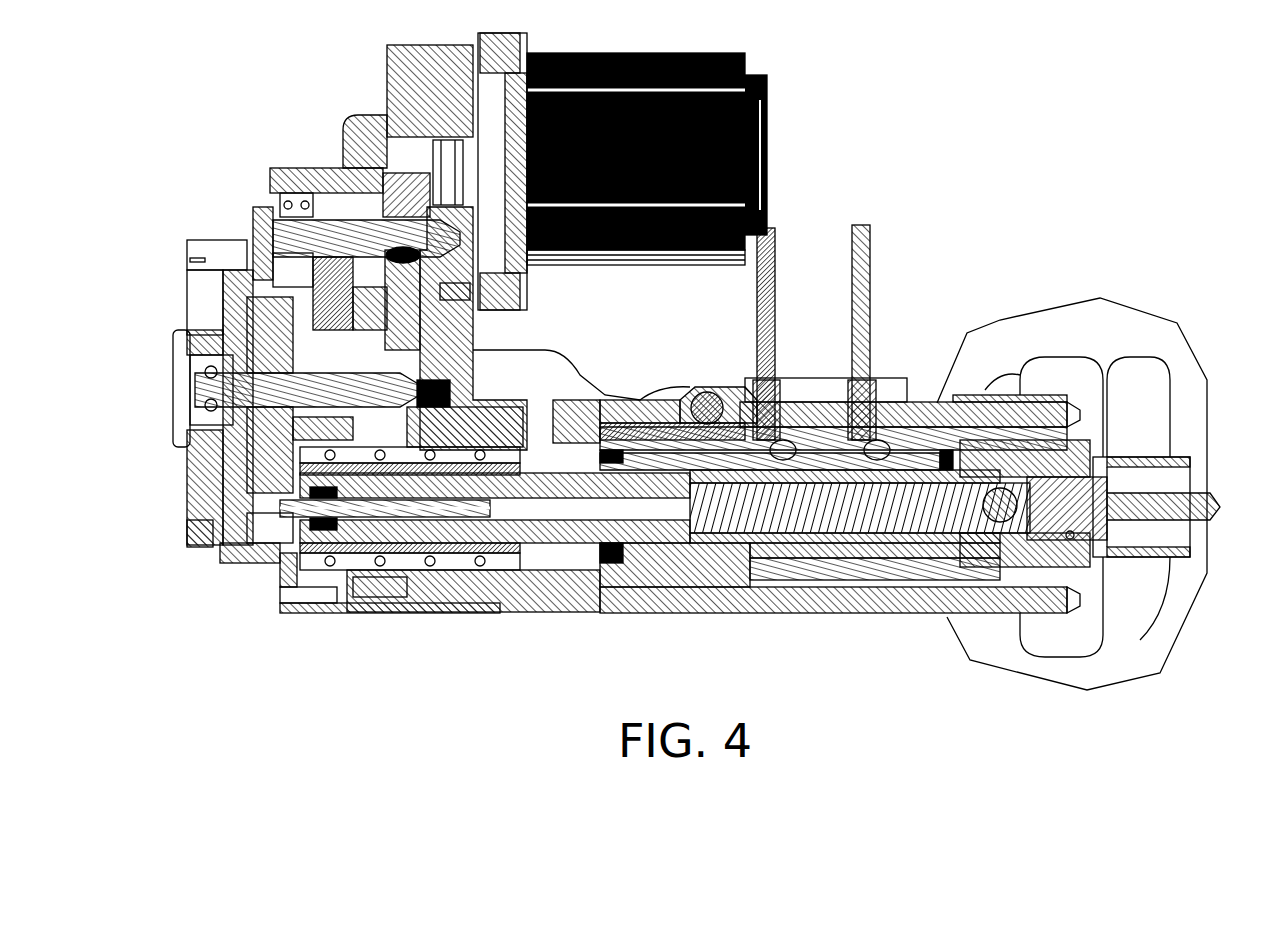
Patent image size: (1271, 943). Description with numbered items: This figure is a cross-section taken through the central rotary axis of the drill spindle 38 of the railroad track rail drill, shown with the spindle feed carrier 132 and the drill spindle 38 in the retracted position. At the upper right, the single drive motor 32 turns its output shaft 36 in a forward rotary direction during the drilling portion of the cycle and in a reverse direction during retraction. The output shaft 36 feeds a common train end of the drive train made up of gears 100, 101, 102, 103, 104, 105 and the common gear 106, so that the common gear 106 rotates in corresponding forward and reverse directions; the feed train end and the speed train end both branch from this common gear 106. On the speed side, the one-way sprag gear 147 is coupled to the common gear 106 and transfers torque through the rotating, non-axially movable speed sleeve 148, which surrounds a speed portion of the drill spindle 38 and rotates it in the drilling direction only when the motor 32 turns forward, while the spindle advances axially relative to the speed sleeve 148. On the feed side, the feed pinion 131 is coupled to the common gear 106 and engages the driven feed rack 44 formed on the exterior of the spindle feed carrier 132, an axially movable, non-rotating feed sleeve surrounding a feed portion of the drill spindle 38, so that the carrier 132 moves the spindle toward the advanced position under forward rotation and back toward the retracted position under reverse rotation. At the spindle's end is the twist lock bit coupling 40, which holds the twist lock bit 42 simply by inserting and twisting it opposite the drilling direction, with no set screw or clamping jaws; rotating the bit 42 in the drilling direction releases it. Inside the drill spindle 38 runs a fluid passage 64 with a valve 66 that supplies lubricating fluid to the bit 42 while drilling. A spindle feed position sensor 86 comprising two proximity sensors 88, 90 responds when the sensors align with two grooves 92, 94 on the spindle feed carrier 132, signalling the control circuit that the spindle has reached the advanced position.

The single drive motor 32 is at (618, 56).
The output shaft 36 is at (345, 127).
The drill spindle 38 is at (573, 530).
The twist lock bit coupling 40 is at (1087, 567).
The twist lock bit 42 is at (1177, 557).
The driven feed rack 44 is at (640, 437).
The fluid passage 64 is at (683, 510).
The valve 66 is at (993, 510).
The spindle feed position sensor 86 is at (858, 341).
The proximity sensor 88 is at (780, 378).
The proximity sensor 90 is at (867, 378).
The groove 92 is at (780, 457).
The groove 94 is at (900, 450).
The gear of common train end 100 is at (410, 152).
The gear of common train end 101 is at (345, 162).
The gear of common train end 102 is at (303, 170).
The gear of common train end 103 is at (270, 214).
The gear of common train end 104 is at (253, 267).
The gear of common train end 105 is at (267, 335).
The common gear 106 is at (200, 393).
The feed pinion 131 is at (707, 390).
The spindle feed carrier 132 is at (767, 573).
The sprag gear 147 is at (303, 467).
The speed sleeve 148 is at (297, 550).